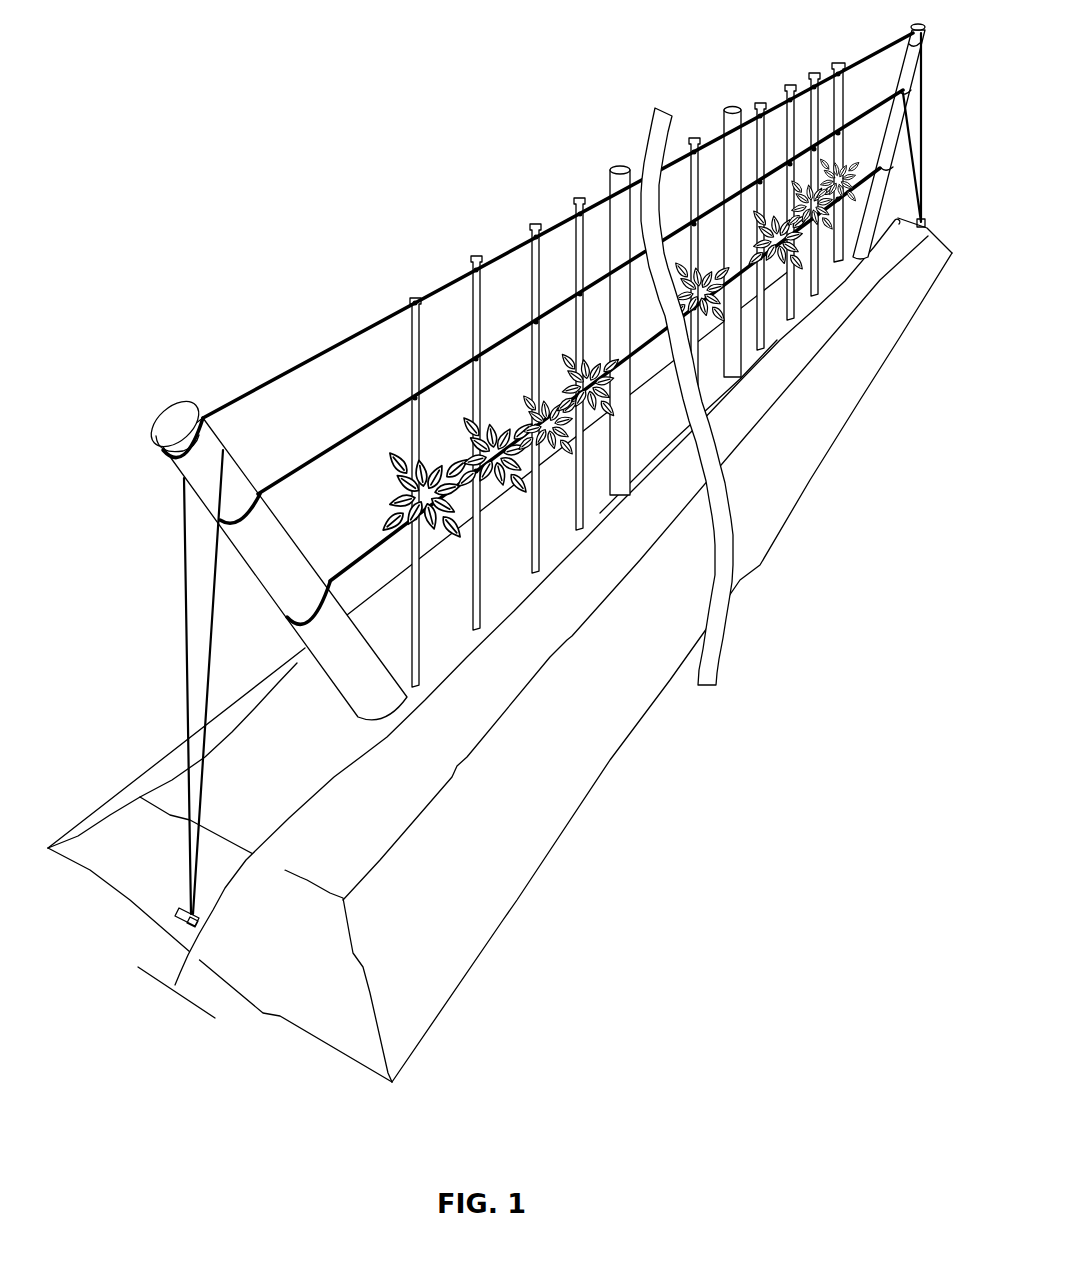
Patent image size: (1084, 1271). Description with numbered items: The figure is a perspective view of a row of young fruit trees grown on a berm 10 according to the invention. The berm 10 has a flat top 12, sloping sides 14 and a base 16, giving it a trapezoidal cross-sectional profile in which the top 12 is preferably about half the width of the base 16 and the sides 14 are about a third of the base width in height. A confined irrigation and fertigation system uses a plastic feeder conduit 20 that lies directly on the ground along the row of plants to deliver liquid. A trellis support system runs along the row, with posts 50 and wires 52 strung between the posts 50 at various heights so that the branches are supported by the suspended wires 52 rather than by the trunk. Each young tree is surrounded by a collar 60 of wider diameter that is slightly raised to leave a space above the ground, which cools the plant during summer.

The berm 10 is at (317, 1008).
The flat top 12 is at (503, 924).
The sloping sides 14 is at (524, 858).
The base 16 is at (340, 1053).
The feeder conduit 20 is at (783, 340).
The posts 50 is at (618, 200).
The wires 52 is at (322, 354).
The collar 60 is at (427, 655).